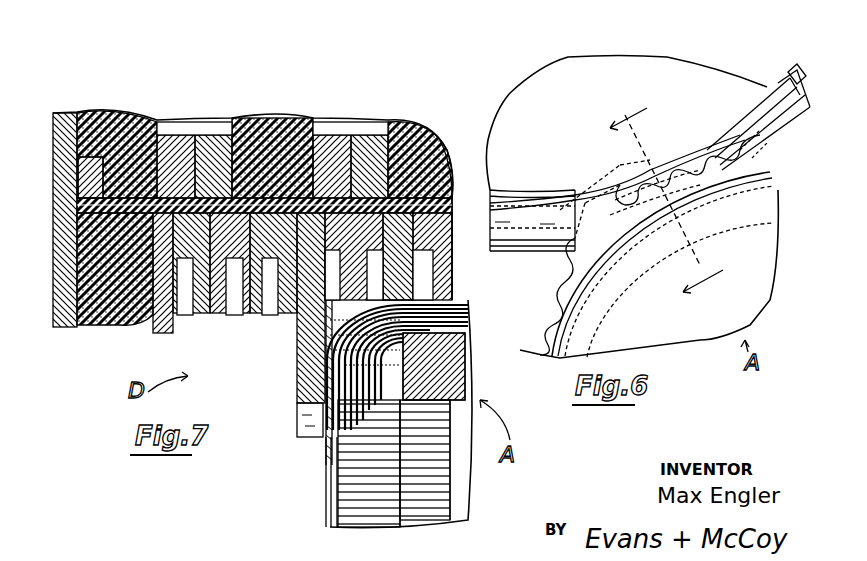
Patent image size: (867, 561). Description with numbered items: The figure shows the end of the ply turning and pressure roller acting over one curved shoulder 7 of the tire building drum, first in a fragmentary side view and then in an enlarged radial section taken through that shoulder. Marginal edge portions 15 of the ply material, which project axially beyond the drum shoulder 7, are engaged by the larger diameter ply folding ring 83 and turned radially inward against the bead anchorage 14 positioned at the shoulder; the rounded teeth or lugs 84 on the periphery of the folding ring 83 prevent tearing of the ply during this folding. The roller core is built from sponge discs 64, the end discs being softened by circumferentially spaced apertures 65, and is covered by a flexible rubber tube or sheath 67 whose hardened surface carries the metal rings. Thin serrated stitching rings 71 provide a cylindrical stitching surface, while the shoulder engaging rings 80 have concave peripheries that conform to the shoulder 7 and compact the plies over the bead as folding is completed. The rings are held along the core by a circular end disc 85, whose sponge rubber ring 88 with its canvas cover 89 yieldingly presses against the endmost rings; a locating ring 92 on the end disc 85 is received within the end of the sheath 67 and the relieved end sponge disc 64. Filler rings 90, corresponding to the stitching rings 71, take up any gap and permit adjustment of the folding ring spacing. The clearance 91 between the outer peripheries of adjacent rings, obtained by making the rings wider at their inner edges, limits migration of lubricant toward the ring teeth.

In FIG. 7, the drum shoulder 7 is at (436, 415).
In FIG. 6, the drum shoulder 7 is at (738, 125).
In FIG. 7, the bead anchorage 14 is at (372, 395).
In FIG. 6, the bead anchorage 14 is at (792, 62).
In FIG. 7, the marginal edge portion of ply material 15 is at (324, 493).
In FIG. 6, the marginal edge portion of ply material 15 is at (520, 190).
In FIG. 7, the sponge disc 64 is at (118, 112).
In FIG. 7, the aperture 65 is at (213, 126).
In FIG. 7, the rubber tube or sheath 67 is at (448, 195).
In FIG. 7, the stitching ring 71 is at (445, 226).
In FIG. 6, the stitching ring 71 is at (575, 295).
In FIG. 7, the shoulder engaging ring 80 is at (345, 200).
In FIG. 7, the ply folding ring 83 is at (296, 372).
In FIG. 6, the ply folding ring 83 is at (625, 188).
In FIG. 7, the teeth or lugs 84 is at (310, 440).
In FIG. 6, the teeth or lugs 84 is at (570, 200).
In FIG. 7, the end disc 85 is at (77, 206).
In FIG. 6, the end disc 85 is at (668, 333).
In FIG. 7, the sponge rubber ring 88 is at (78, 256).
In FIG. 7, the canvas or fabric cover 89 is at (112, 327).
In FIG. 7, the filler ring 90 is at (212, 318).
In FIG. 7, the clearance 91 is at (268, 318).
In FIG. 7, the locating ring 92 is at (78, 160).